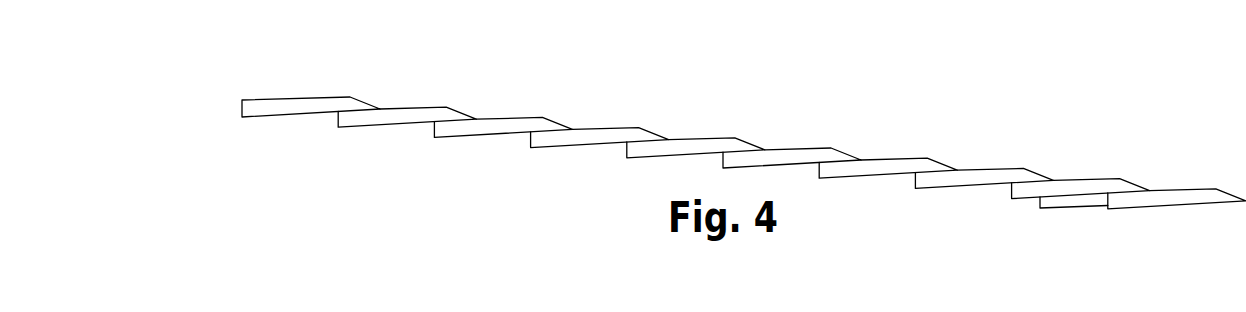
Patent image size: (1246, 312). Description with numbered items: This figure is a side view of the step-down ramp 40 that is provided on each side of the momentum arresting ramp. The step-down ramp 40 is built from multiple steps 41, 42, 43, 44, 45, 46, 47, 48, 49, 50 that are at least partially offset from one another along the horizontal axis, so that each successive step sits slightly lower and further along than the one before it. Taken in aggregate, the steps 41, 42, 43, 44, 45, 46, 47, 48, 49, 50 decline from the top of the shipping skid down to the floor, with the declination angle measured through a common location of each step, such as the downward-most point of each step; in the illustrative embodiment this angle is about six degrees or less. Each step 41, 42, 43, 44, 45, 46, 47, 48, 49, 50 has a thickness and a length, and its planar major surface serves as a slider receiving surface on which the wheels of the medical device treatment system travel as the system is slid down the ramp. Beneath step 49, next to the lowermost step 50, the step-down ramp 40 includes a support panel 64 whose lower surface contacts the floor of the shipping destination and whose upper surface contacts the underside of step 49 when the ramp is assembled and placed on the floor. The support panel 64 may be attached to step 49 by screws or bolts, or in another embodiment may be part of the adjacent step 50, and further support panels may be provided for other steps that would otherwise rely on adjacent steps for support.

The step-down ramp 40 is at (744, 129).
The step 41 is at (309, 106).
The step 42 is at (407, 119).
The step 43 is at (512, 126).
The step 44 is at (612, 138).
The step 45 is at (716, 147).
The step 46 is at (807, 158).
The step 47 is at (899, 169).
The step 48 is at (992, 178).
The step 49 is at (1083, 187).
The step 50 is at (1176, 197).
The support panel 64 is at (1073, 200).